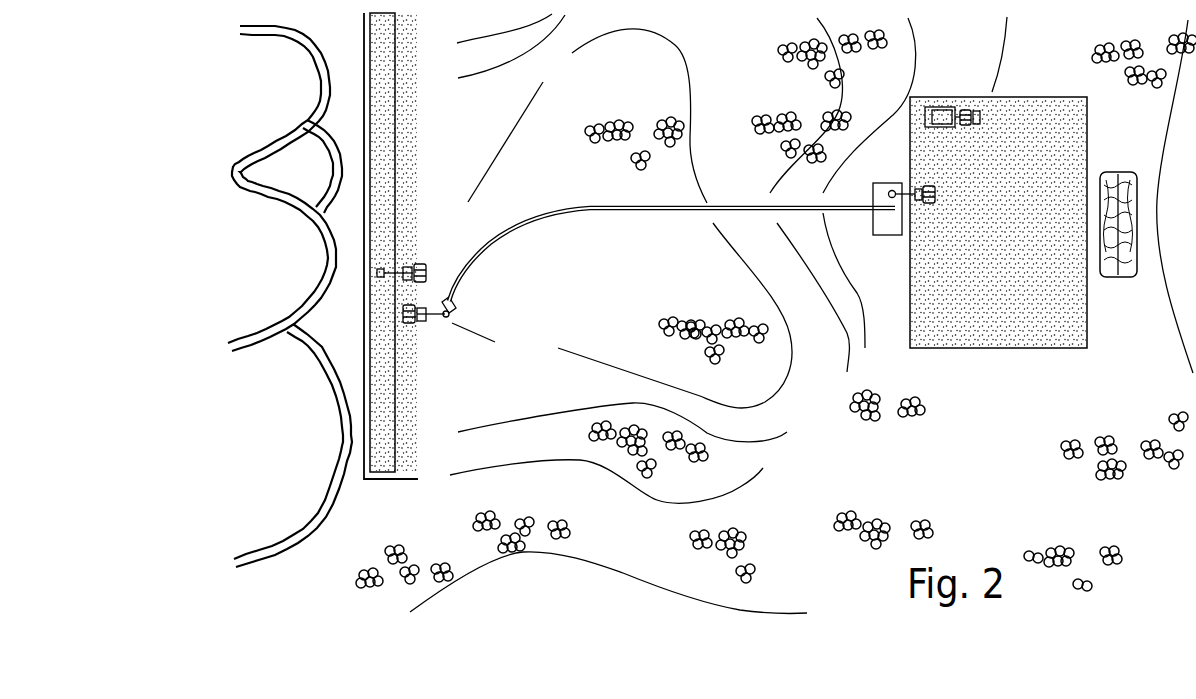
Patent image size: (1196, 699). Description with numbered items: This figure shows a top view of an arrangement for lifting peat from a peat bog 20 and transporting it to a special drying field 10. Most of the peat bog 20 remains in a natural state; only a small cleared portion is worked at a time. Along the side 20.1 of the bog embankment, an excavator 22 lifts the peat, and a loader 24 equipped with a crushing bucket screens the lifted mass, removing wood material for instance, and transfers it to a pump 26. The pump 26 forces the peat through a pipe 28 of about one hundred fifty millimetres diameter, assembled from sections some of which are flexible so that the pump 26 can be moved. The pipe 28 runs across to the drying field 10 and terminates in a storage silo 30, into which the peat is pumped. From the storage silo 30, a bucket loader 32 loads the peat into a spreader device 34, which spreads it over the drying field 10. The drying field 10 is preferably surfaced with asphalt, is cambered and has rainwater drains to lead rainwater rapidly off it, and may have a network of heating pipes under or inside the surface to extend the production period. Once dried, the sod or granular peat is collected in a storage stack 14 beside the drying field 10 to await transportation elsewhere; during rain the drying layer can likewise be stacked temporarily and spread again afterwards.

The drying field 10 is at (1036, 295).
The storage stack 14 is at (1137, 253).
The peat bog 20 is at (350, 348).
The side of the bog embankment 20.1 is at (380, 62).
The excavator 22 is at (405, 263).
The loader 24 is at (422, 323).
The pump 26 is at (453, 311).
The pipe 28 is at (573, 213).
The storage silo 30 is at (885, 223).
The bucket loader 32 is at (913, 186).
The spreader device 34 is at (940, 109).